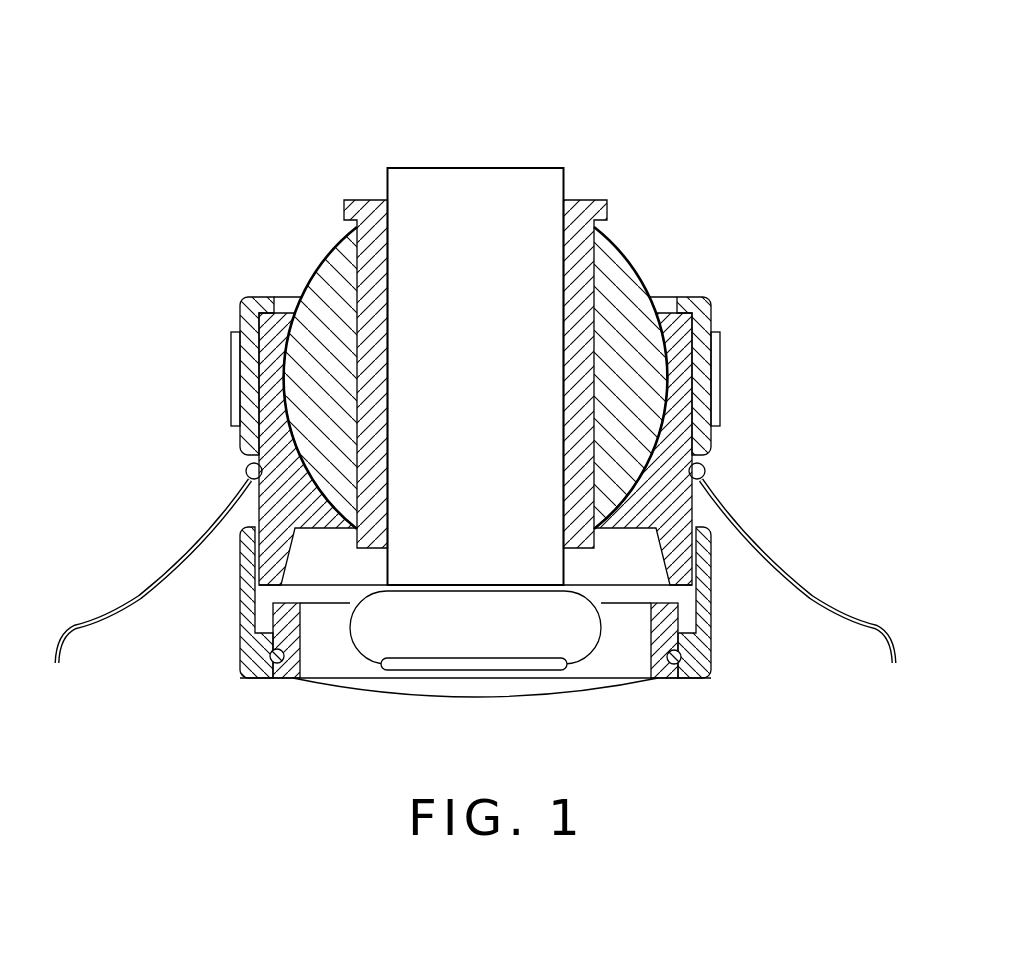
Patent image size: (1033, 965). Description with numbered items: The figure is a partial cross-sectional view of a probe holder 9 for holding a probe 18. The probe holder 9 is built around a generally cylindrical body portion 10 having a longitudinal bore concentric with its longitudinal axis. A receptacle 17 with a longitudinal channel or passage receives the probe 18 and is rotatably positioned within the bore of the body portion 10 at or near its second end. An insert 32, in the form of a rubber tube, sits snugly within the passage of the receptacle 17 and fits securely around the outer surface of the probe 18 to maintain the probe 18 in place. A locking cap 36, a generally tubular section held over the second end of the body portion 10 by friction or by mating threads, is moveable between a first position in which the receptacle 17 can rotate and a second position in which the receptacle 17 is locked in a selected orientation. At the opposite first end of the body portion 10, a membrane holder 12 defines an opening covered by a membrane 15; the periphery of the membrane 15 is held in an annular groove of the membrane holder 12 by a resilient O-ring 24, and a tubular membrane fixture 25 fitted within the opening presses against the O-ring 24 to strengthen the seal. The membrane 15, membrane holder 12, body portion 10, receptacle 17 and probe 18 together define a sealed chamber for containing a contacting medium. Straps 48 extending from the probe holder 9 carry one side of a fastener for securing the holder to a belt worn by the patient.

The probe holder 9 is at (622, 110).
The probe 18 is at (485, 166).
The insert 32 is at (578, 208).
The receptacle 17 is at (623, 272).
The locking cap 36 is at (695, 307).
The body portion 10 is at (680, 517).
The membrane holder 12 is at (700, 648).
The membrane fixture 25 is at (293, 663).
The O-ring 24 is at (683, 667).
The membrane 15 is at (452, 697).
The straps 48 is at (120, 600).